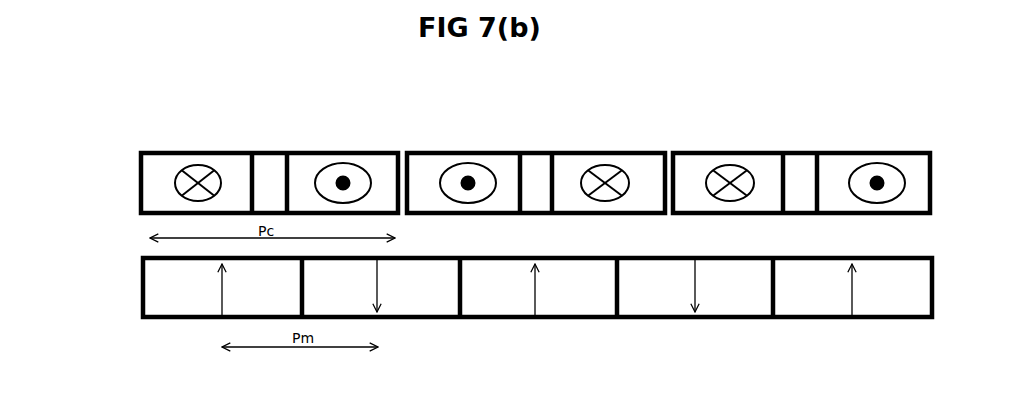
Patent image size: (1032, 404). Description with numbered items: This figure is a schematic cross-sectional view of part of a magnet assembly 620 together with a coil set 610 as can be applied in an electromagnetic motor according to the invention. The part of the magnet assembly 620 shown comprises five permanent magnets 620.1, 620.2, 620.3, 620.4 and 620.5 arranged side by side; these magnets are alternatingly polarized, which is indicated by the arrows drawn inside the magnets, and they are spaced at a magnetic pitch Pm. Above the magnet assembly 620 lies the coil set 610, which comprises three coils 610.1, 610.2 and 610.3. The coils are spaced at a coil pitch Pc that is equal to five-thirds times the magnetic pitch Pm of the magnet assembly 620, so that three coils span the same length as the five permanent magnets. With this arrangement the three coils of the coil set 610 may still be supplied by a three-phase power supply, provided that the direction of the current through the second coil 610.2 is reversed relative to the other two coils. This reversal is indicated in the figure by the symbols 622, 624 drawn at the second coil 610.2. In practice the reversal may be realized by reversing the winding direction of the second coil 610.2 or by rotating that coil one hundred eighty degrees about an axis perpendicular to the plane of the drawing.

The coil set 610 is at (100, 118).
The first coil 610.1 is at (279, 153).
The second coil 610.2 is at (568, 158).
The third coil 610.3 is at (780, 153).
The current direction symbol 622 is at (448, 172).
The current direction symbol 624 is at (631, 171).
The magnet assembly 620 is at (118, 278).
The permanent magnet 620.1 is at (160, 295).
The permanent magnet 620.2 is at (410, 301).
The permanent magnet 620.3 is at (563, 303).
The permanent magnet 620.4 is at (673, 304).
The permanent magnet 620.5 is at (831, 297).